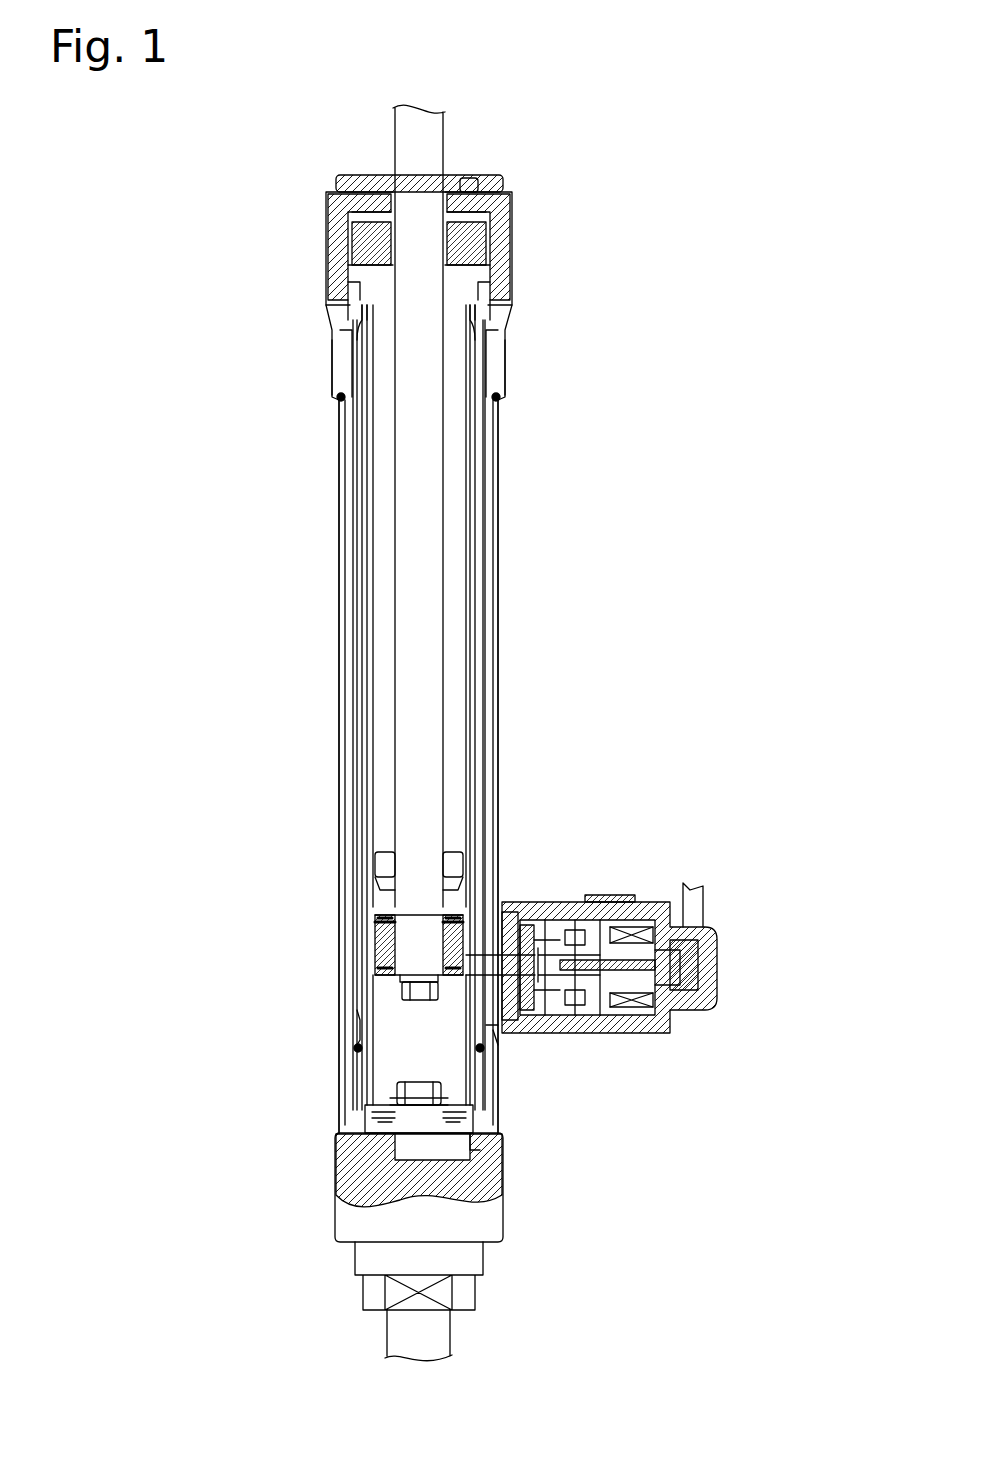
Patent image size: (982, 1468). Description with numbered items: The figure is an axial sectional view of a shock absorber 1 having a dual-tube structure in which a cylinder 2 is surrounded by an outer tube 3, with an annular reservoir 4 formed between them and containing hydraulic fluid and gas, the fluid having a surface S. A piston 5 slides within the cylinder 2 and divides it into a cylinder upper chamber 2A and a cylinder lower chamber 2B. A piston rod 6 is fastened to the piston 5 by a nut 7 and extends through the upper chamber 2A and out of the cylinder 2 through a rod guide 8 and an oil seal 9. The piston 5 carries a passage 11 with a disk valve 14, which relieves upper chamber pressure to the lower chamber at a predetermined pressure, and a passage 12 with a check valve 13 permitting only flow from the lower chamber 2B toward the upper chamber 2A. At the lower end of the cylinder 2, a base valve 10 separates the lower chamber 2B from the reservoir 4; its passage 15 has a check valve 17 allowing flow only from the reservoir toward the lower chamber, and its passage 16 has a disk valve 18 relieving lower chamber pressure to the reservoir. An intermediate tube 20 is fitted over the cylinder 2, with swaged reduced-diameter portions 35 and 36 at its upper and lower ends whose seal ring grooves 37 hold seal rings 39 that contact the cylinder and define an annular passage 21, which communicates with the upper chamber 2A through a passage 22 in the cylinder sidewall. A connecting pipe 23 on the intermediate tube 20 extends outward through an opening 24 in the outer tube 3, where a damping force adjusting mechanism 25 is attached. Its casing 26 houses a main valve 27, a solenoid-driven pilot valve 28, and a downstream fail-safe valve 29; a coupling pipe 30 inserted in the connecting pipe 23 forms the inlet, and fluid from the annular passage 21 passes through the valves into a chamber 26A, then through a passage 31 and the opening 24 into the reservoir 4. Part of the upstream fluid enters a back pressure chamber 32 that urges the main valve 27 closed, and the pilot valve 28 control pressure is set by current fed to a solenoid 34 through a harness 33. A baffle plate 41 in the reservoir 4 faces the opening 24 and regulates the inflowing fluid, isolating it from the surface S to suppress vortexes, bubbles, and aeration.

The shock absorber 1 is at (636, 212).
The cylinder 2 is at (465, 432).
The cylinder upper chamber 2A is at (385, 585).
The cylinder lower chamber 2B is at (365, 1075).
The outer tube 3 is at (495, 495).
The reservoir 4 is at (348, 468).
The piston 5 is at (380, 960).
The piston rod 6 is at (393, 138).
The nut 7 is at (400, 995).
The rod guide 8 is at (357, 245).
The oil seal 9 is at (471, 185).
The base valve 10 is at (421, 1234).
The passage 11 is at (378, 942).
The passage 12 is at (493, 910).
The check valve 13 is at (458, 905).
The disk valve 14 is at (410, 987).
The passage 15 is at (372, 1125).
The passage 16 is at (470, 1130).
The check valve 17 is at (375, 1120).
The disk valve 18 is at (440, 1140).
The intermediate tube 20 is at (358, 508).
The annular passage 21 is at (470, 455).
The passage 22 is at (465, 348).
The connecting pipe 23 is at (520, 905).
The opening 24 is at (538, 1027).
The damping force adjusting mechanism 25 is at (657, 929).
The casing 26 is at (600, 898).
The chamber 26A is at (640, 880).
The main valve 27 is at (567, 1027).
The pilot valve 28 is at (603, 1040).
The fail-safe valve 29 is at (628, 1038).
The coupling pipe 30 is at (498, 1035).
The passage 31 is at (540, 905).
The back pressure chamber 32 is at (577, 1028).
The harness 33 is at (705, 897).
The solenoid 34 is at (690, 905).
The reduced-diameter portion 35 is at (352, 338).
The reduced-diameter portion 36 is at (357, 1030).
The seal ring groove 37 is at (332, 694).
The seal ring 39 is at (418, 722).
The baffle plate 41 is at (500, 905).
The surface of hydraulic fluid S is at (347, 801).